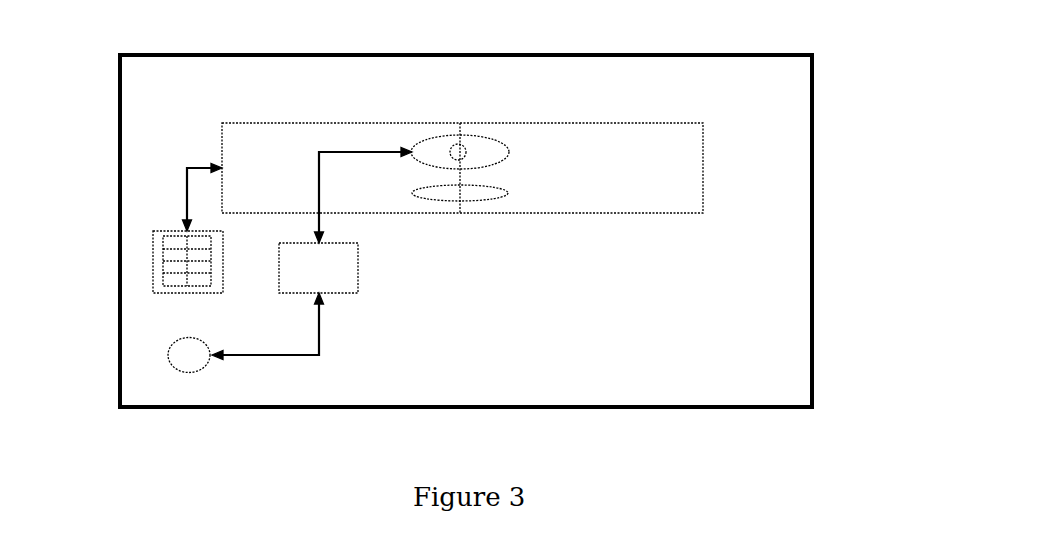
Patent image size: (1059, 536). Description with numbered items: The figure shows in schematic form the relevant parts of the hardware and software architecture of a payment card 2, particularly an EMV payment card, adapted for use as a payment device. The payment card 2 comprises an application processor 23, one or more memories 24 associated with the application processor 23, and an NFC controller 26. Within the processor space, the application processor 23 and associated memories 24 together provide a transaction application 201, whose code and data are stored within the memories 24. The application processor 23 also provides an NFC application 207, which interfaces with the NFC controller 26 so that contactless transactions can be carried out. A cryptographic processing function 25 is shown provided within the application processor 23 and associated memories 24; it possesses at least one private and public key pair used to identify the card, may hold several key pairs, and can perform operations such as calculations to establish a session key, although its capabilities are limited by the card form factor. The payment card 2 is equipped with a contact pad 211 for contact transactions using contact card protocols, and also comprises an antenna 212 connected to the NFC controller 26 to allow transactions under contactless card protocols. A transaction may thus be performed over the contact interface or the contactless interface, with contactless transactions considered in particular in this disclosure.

The payment card 2 is at (804, 44).
The application processor 23 is at (235, 135).
The memories 24 is at (468, 179).
The NFC application 207 is at (437, 136).
The transaction application 201 is at (520, 160).
The cryptographic processing function 25 is at (506, 208).
The NFC controller 26 is at (370, 274).
The contact pad 211 is at (140, 277).
The antenna 212 is at (152, 354).